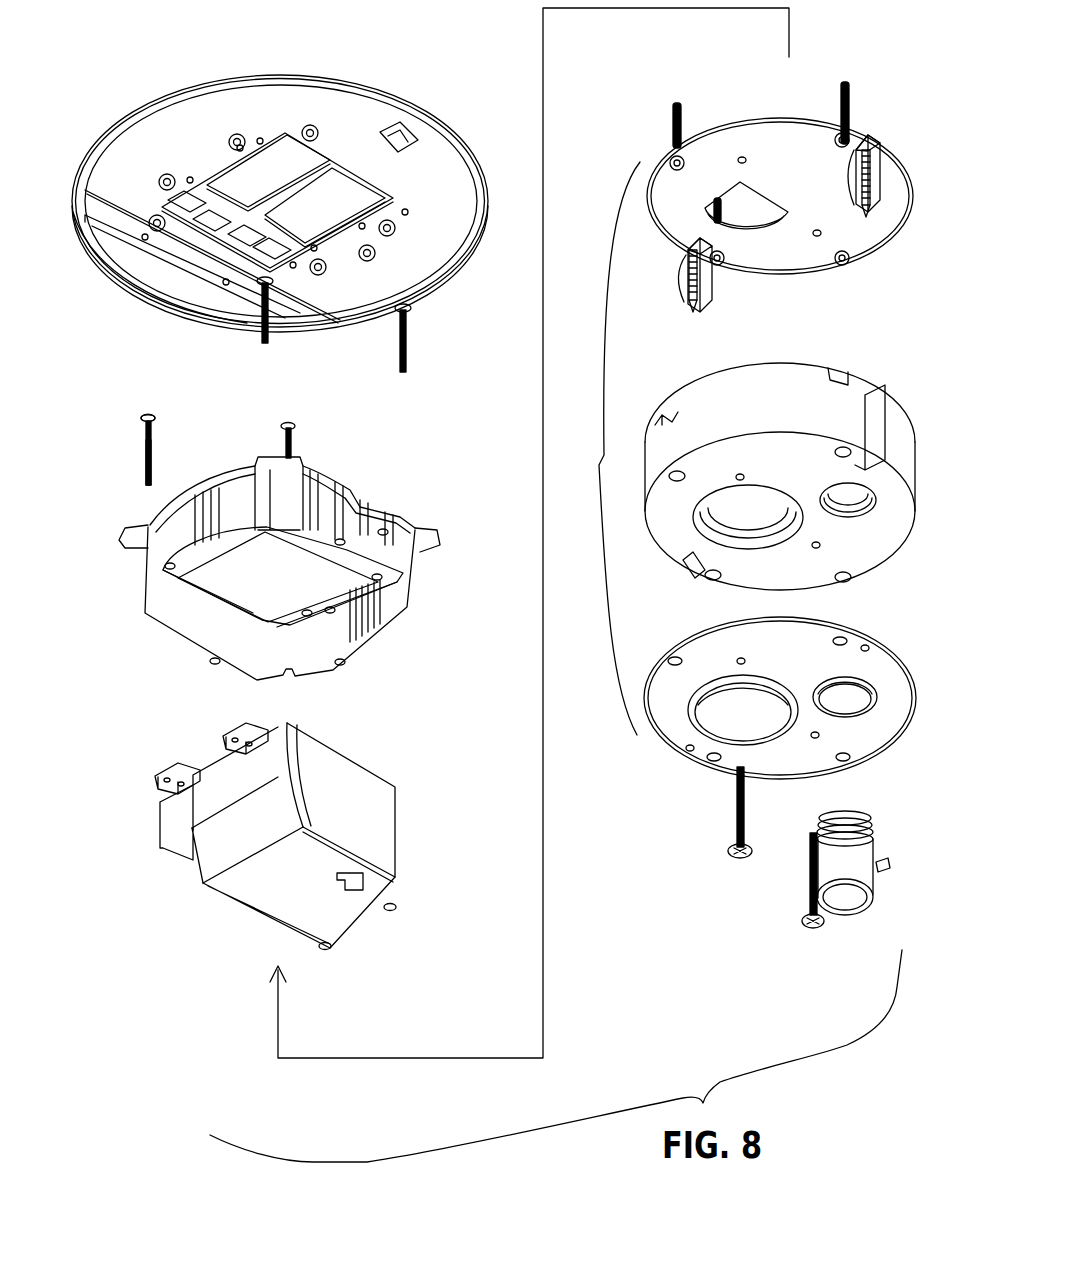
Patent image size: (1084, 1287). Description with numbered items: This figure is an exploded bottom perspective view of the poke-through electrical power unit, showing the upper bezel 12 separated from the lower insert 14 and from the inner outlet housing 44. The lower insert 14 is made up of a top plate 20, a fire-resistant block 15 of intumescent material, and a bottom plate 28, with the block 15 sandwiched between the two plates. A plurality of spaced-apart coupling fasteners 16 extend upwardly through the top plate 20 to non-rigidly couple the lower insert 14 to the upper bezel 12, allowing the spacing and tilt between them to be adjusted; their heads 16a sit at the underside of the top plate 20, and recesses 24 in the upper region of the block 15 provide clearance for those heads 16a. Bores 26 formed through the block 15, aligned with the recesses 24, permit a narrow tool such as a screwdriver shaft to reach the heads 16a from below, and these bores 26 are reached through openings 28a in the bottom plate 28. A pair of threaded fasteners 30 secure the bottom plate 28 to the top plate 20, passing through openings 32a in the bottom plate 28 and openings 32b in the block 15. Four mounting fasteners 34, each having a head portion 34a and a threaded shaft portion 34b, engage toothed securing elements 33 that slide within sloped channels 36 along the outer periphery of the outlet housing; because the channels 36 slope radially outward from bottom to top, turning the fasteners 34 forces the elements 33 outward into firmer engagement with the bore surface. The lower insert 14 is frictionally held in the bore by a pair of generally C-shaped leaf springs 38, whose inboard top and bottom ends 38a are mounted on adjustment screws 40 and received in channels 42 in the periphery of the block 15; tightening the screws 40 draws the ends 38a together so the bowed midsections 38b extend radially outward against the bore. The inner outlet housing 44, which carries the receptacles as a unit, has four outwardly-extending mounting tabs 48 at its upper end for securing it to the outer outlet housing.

The upper bezel 12 is at (130, 118).
The lower insert 14 is at (600, 448).
The fire-resistant block 15 is at (898, 412).
The coupling fasteners 16 is at (683, 115).
The fastener heads 16a is at (724, 264).
The top plate 20 is at (910, 172).
The recesses 24 is at (662, 402).
The bores 26 is at (672, 485).
The bottom plate 28 is at (898, 668).
The openings 28a is at (672, 670).
The threaded fasteners 30 is at (735, 826).
The openings or bores 32a is at (744, 660).
The openings or bores 32b is at (748, 162).
The toothed securing elements 33 is at (258, 474).
The mounting fasteners 34 is at (250, 338).
The head portions 34a is at (152, 416).
The threaded shaft portions 34b is at (146, 466).
The sloped channels 36 is at (262, 532).
The leaf springs 38 is at (664, 272).
The top and bottom ends 38a is at (700, 240).
The bowed midsections 38b is at (676, 280).
The adjustment screws 40 is at (686, 308).
The channels 42 is at (890, 447).
The inner outlet housing 44 is at (178, 877).
The mounting tabs 48 is at (166, 765).